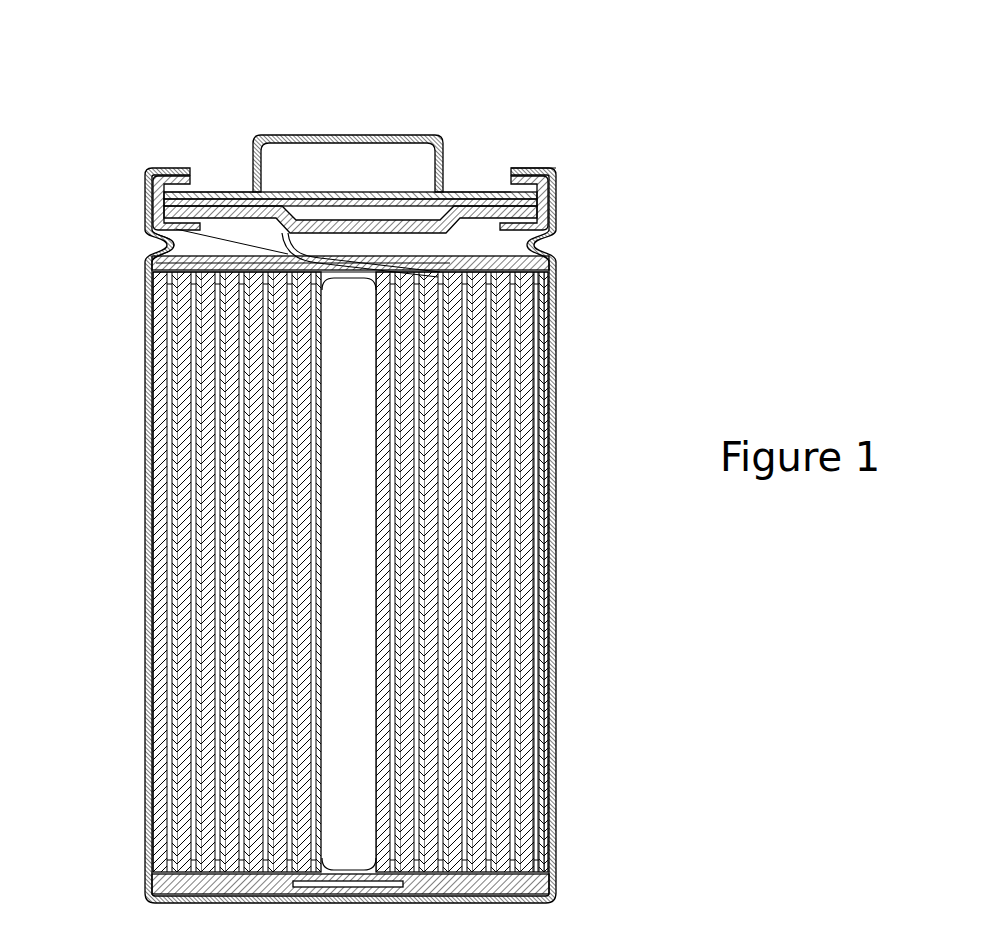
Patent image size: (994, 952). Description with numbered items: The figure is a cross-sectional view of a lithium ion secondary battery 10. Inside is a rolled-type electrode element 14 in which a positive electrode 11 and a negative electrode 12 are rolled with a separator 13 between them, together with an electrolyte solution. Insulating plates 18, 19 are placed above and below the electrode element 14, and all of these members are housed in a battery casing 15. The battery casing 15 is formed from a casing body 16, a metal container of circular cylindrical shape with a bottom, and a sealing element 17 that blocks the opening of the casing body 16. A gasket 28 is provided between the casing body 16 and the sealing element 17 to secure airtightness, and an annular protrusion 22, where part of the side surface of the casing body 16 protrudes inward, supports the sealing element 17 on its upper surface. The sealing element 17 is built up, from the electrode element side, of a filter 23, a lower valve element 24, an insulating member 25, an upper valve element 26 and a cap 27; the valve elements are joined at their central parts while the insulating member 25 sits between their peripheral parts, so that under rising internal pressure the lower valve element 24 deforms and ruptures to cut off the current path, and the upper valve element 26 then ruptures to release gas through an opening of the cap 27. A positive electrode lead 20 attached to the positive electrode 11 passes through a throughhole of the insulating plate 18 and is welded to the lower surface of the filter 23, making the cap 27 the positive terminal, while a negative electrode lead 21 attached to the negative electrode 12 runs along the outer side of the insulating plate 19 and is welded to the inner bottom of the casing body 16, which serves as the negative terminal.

The lithium ion secondary battery 10 is at (567, 24).
The positive electrode 11 is at (553, 633).
The negative electrode 12 is at (553, 655).
The separator 13 is at (636, 622).
The rolled-type electrode element 14 is at (410, 572).
The battery casing 15 is at (458, 86).
The casing body 16 is at (528, 166).
The sealing element 17 is at (466, 178).
The insulating plate 18 is at (552, 262).
The insulating plate 19 is at (557, 888).
The positive electrode lead 20 is at (145, 225).
The negative electrode lead 21 is at (145, 875).
The protrusion 22 is at (147, 243).
The filter 23 is at (353, 223).
The lower valve element 24 is at (262, 190).
The insulating member 25 is at (213, 190).
The upper valve element 26 is at (271, 190).
The cap 27 is at (407, 135).
The gasket 28 is at (556, 183).